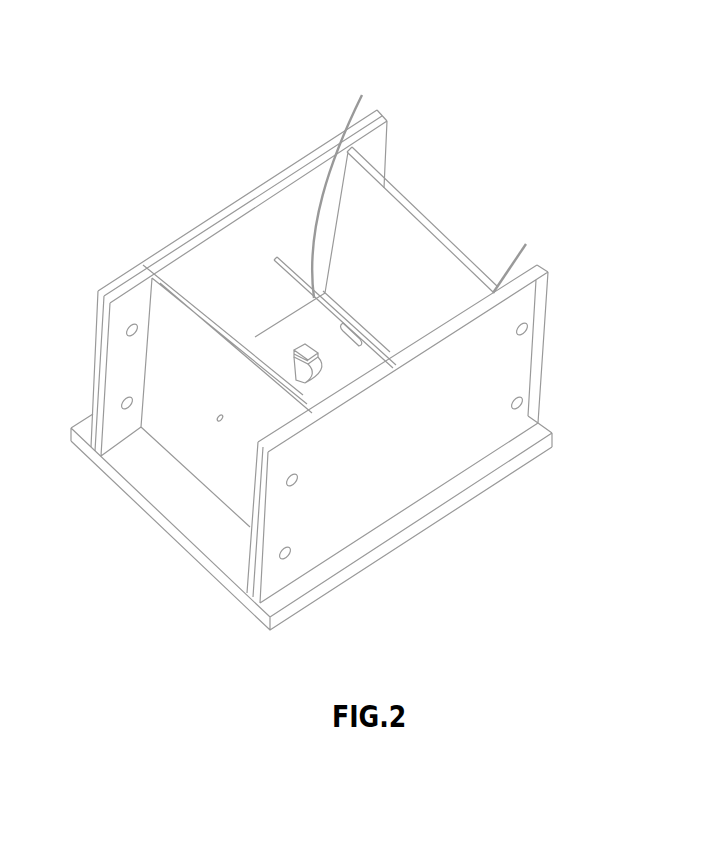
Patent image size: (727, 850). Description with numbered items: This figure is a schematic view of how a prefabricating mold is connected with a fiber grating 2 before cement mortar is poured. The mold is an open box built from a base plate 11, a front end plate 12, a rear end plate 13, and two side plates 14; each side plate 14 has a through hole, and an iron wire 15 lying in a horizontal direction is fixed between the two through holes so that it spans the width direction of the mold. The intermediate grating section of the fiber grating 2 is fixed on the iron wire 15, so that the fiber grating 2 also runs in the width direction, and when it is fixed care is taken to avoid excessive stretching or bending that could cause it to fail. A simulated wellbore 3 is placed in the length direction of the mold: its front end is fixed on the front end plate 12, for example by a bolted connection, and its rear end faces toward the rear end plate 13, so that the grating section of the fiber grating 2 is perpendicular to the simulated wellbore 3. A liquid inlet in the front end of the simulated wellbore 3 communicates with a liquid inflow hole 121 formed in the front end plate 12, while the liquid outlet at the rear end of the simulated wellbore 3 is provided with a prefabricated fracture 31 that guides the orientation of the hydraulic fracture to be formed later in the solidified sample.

The fiber grating 2 is at (315, 228).
The simulated wellbore 3 is at (217, 274).
The prefabricated fracture 31 is at (303, 353).
The base plate 11 is at (333, 566).
The front end plate 12 is at (184, 433).
The liquid inflow hole 121 is at (220, 421).
The rear end plate 13 is at (420, 254).
The side plate 14 is at (435, 427).
The iron wire 15 is at (292, 275).